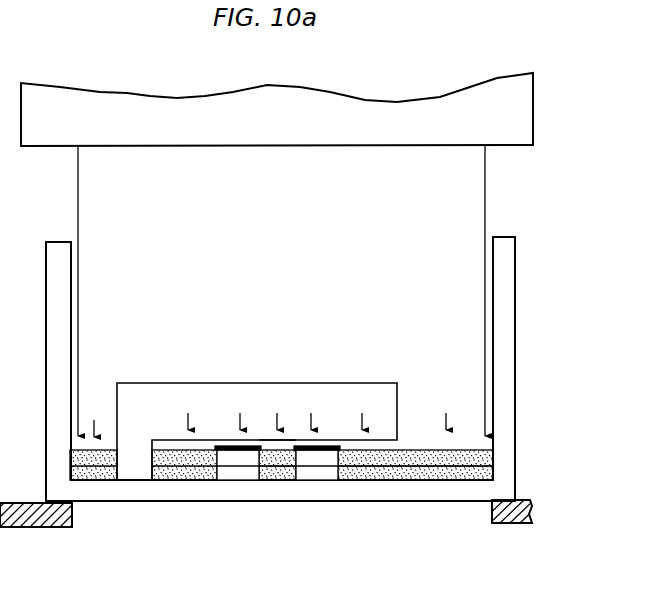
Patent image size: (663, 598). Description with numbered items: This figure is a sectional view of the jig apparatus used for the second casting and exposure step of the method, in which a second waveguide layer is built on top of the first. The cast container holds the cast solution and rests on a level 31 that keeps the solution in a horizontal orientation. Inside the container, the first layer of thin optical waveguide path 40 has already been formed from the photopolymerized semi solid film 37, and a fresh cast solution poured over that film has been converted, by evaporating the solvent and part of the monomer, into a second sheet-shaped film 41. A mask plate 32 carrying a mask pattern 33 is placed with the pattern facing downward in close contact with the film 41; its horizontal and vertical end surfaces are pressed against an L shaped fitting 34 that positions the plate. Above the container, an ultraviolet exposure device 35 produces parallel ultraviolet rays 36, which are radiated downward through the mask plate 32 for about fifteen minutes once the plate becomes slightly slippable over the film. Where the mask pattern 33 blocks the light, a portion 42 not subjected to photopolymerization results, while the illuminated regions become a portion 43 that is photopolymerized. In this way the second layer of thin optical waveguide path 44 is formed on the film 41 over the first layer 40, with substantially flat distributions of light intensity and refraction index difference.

The level 31 is at (25, 528).
The mask plate 32 is at (265, 440).
The mask pattern 33 is at (228, 446).
The L shaped fitting 34 is at (382, 394).
The ultraviolet exposure device 35 is at (535, 103).
The parallel ultraviolet rays 36 is at (77, 190).
The semi solid film 37 is at (385, 474).
The first layer of thin optical waveguide path 40 is at (273, 480).
The film 41 is at (430, 457).
The portion not subjected to photopolymerization 42 is at (240, 458).
The portion subjected to photopolymerization 43 is at (187, 458).
The second layer of thin optical waveguide path 44 is at (287, 466).